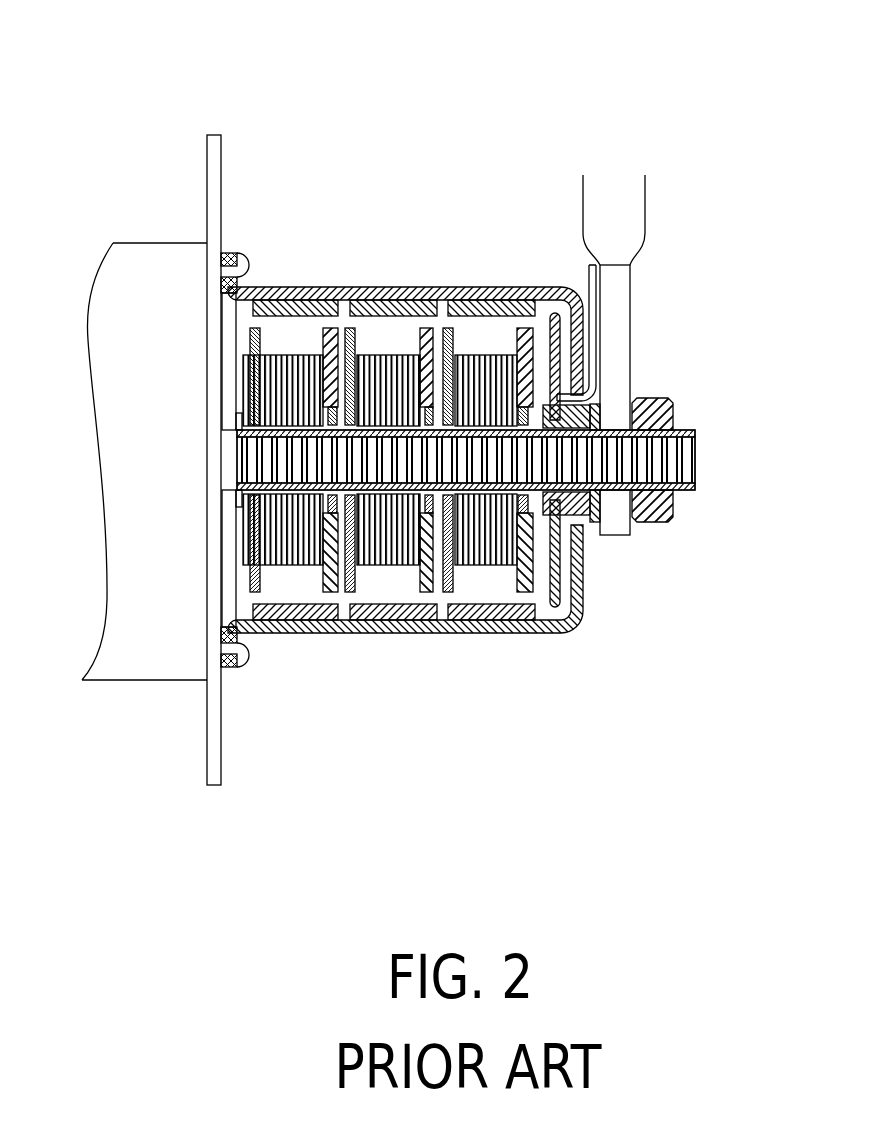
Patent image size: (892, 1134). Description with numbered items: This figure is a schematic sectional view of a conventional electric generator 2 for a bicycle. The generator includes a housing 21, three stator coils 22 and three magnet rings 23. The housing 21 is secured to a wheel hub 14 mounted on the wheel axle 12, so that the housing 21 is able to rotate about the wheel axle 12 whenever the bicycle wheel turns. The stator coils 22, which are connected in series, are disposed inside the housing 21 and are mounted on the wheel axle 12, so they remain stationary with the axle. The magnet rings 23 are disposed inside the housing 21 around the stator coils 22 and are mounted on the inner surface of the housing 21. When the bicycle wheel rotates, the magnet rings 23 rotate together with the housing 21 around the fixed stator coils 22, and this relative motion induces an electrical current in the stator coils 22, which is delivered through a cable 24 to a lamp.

The conventional electric generator 2 is at (440, 150).
The wheel axle 12 is at (680, 430).
The wheel hub 14 is at (215, 180).
The housing 21 is at (478, 292).
The stator coils 22 is at (488, 570).
The magnet rings 23 is at (463, 292).
The cable 24 is at (588, 293).